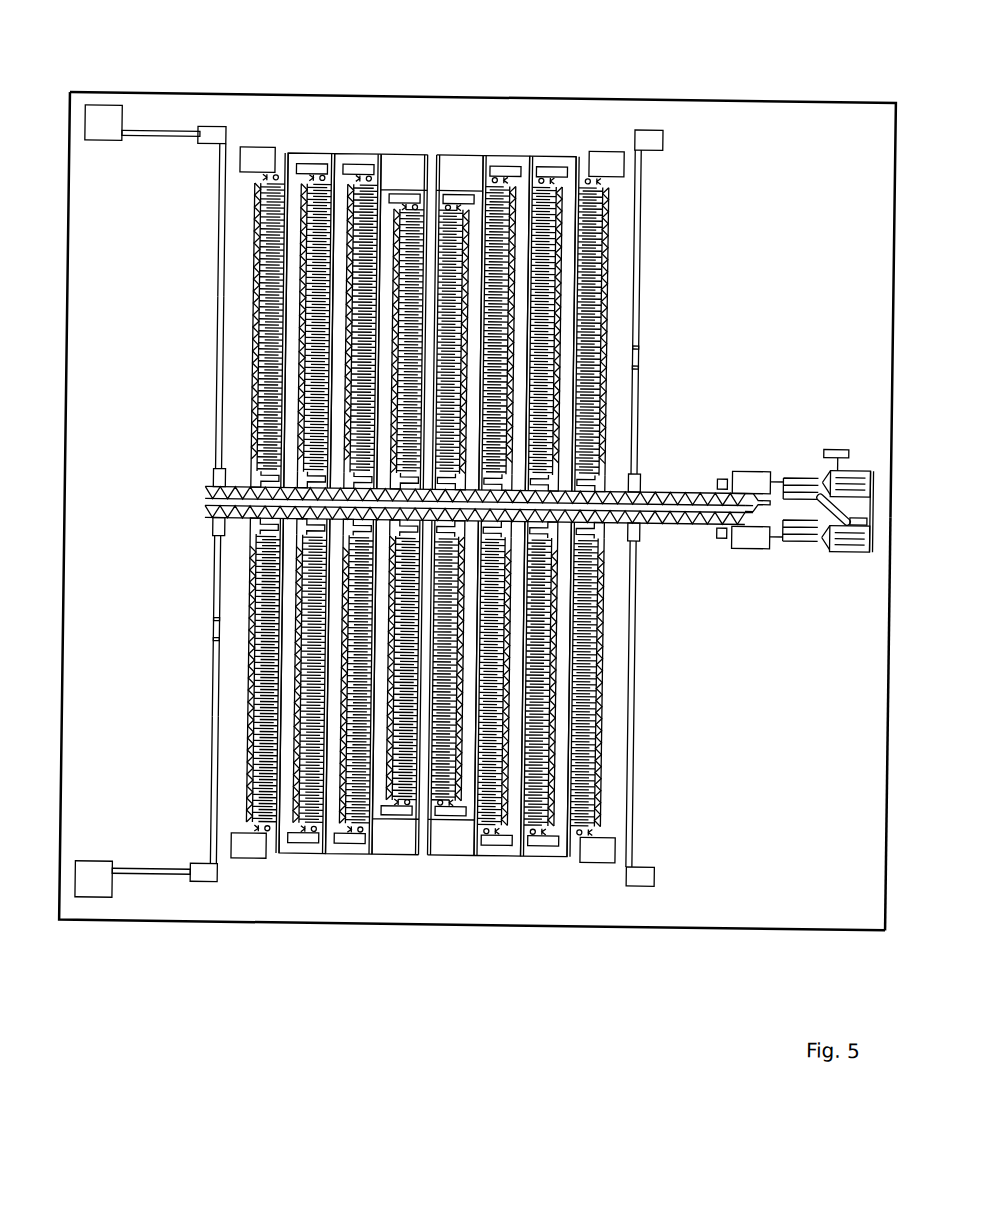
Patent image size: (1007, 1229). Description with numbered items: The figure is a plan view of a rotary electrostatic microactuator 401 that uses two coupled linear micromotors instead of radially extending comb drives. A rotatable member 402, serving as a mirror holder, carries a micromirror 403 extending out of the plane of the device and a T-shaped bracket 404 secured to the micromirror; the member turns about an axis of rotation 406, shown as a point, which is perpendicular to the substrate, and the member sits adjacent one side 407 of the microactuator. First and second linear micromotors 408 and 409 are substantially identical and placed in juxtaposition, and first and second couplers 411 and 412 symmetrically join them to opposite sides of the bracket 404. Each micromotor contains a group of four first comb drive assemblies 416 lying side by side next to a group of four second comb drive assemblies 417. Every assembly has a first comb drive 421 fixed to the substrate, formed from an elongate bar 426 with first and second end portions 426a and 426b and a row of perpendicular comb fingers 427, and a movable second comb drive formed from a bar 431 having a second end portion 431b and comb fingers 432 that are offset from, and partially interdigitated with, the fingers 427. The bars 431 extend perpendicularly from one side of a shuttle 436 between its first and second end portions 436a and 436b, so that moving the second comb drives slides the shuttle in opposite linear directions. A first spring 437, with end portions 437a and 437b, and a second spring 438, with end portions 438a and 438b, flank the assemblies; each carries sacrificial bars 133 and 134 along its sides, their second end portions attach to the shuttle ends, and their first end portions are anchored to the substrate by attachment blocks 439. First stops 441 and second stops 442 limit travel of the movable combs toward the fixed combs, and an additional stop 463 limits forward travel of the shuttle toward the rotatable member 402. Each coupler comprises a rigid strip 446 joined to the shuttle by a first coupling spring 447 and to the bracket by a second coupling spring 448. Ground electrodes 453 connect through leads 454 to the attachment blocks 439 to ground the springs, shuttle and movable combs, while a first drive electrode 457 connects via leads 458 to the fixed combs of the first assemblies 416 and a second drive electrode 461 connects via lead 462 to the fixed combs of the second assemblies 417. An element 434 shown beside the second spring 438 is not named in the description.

The rotary electrostatic microactuator 401 is at (477, 494).
The rotatable member 402 is at (822, 536).
The micromirror 403 is at (825, 467).
The T-shaped bracket 404 is at (840, 517).
The axis of rotation 406 is at (857, 460).
The side 407 is at (860, 925).
The first linear micromotor 408 is at (694, 822).
The second linear micromotor 409 is at (736, 179).
The first coupler 411 is at (859, 550).
The second coupler 412 is at (837, 447).
The first comb drive assembly 416 is at (237, 288).
The second comb drive assembly 417 is at (609, 281).
The first comb drive 421 is at (322, 861).
The elongate bar 426 is at (329, 828).
The first end portion 426a is at (358, 180).
The second end portion 426b is at (315, 442).
The comb drive fingers 427 is at (316, 192).
The bar 431 is at (610, 320).
The second end portion 431b is at (254, 818).
The comb fingers 432 is at (596, 188).
The right anchor block 434 is at (647, 128).
The shuttle 436 is at (660, 488).
The first end portion 436a is at (214, 493).
The second end portion 436b is at (718, 534).
The first spring member 437 is at (213, 353).
The first end portion 437a is at (211, 163).
The second end portion 437b is at (220, 543).
The second spring member 438 is at (637, 296).
The first end portion 438a is at (635, 158).
The second end portion 438b is at (641, 554).
The attachment block 439 is at (200, 132).
The first stops 441 is at (384, 179).
The second stops 442 is at (501, 176).
The rigid strip 446 is at (838, 470).
The input comb fingers 447 is at (795, 478).
The second coupling spring 448 is at (860, 525).
The ground electrodes 453 is at (123, 113).
The leads 454 is at (160, 133).
The first drive electrode 457 is at (442, 150).
The leads 458 is at (347, 162).
The second drive electrode 461 is at (458, 142).
The lead 462 is at (580, 149).
The additional stop 463 is at (755, 472).
The first sacrificial bar 133 is at (630, 366).
The second sacrificial bar 134 is at (630, 346).